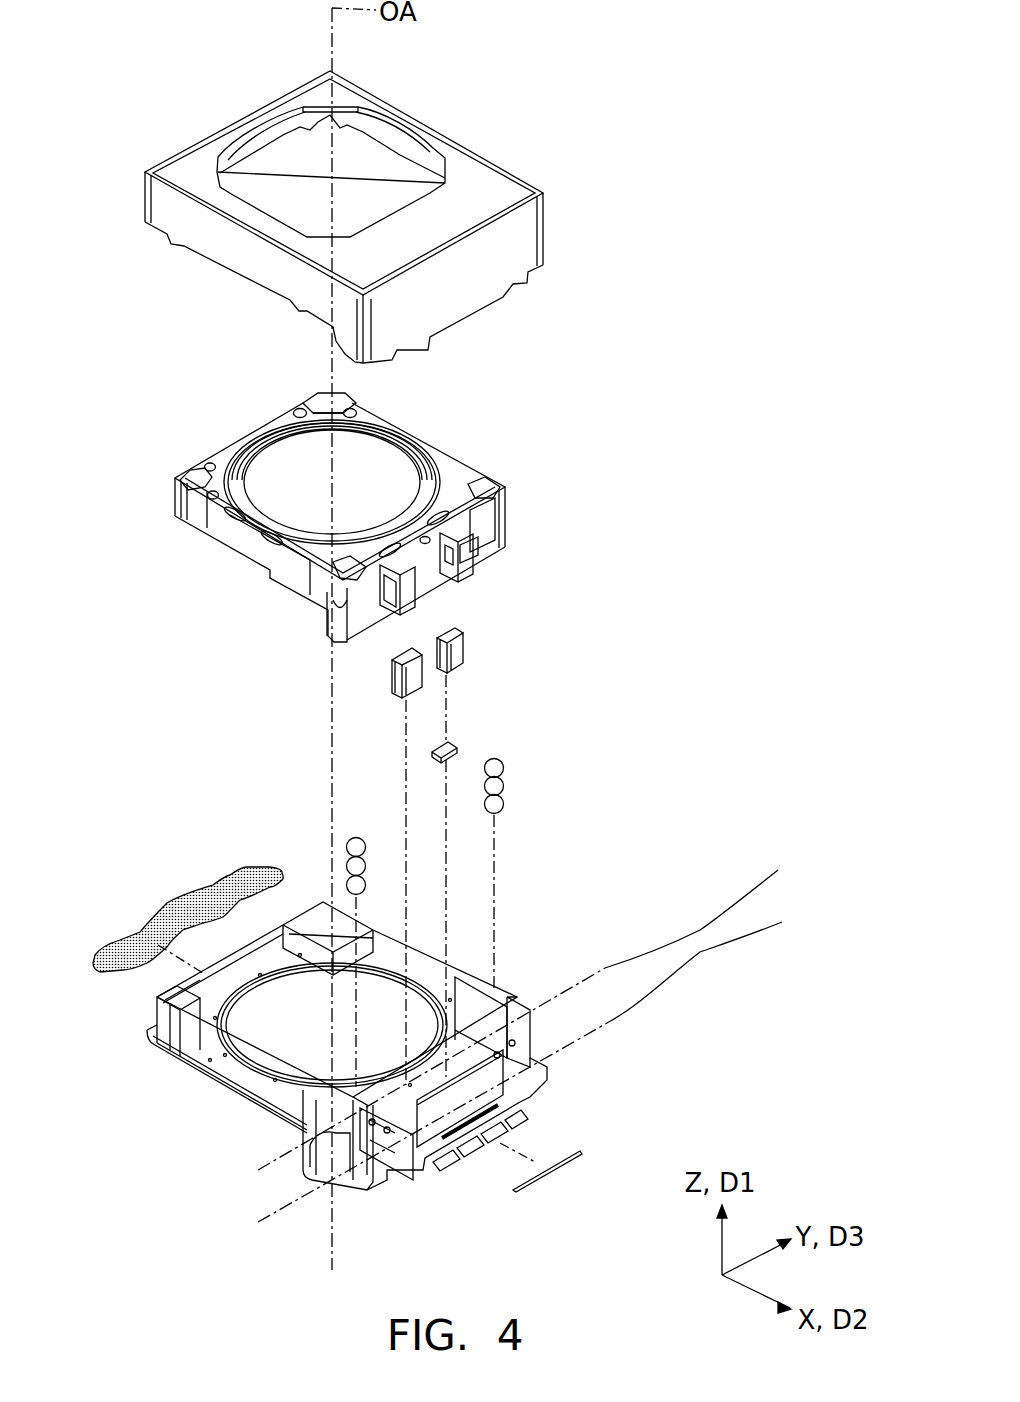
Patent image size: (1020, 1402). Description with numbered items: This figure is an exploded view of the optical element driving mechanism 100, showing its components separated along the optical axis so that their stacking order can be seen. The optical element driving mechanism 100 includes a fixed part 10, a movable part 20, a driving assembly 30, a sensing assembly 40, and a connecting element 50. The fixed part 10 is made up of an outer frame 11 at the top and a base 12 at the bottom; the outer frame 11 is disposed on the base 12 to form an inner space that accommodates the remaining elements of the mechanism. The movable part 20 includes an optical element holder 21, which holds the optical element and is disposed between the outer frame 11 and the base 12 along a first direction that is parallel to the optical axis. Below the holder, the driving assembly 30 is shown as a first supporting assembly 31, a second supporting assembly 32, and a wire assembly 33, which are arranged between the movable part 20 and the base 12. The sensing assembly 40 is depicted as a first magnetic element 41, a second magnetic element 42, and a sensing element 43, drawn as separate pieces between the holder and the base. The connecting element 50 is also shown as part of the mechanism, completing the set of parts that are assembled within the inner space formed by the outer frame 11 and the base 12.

The optical element driving mechanism 100 is at (108, 37).
The fixed part 10 is at (818, 14).
The outer frame 11 is at (528, 241).
The base 12 is at (180, 1000).
The movable part 20 is at (509, 464).
The optical element holder 21 is at (430, 448).
The driving assembly 30 is at (818, 82).
The first supporting assembly 31 is at (518, 779).
The second supporting assembly 32 is at (341, 863).
The wire assembly 33 is at (779, 899).
The sensing assembly 40 is at (818, 182).
The first magnetic element 41 is at (458, 652).
The second magnetic element 42 is at (397, 679).
The sensing element 43 is at (450, 745).
The connecting element 50 is at (172, 918).